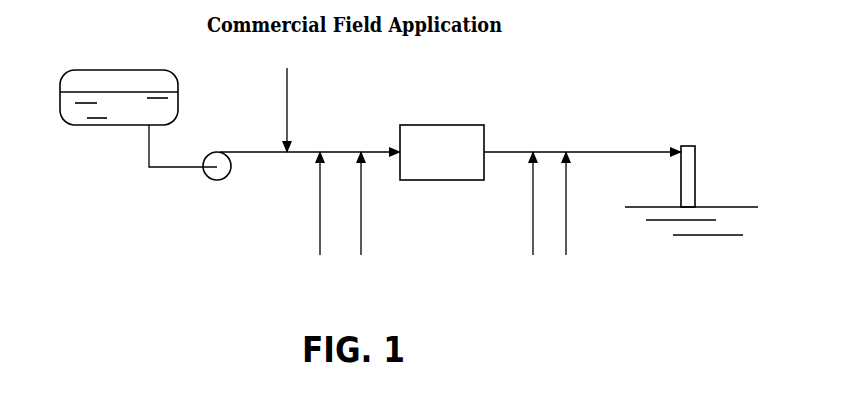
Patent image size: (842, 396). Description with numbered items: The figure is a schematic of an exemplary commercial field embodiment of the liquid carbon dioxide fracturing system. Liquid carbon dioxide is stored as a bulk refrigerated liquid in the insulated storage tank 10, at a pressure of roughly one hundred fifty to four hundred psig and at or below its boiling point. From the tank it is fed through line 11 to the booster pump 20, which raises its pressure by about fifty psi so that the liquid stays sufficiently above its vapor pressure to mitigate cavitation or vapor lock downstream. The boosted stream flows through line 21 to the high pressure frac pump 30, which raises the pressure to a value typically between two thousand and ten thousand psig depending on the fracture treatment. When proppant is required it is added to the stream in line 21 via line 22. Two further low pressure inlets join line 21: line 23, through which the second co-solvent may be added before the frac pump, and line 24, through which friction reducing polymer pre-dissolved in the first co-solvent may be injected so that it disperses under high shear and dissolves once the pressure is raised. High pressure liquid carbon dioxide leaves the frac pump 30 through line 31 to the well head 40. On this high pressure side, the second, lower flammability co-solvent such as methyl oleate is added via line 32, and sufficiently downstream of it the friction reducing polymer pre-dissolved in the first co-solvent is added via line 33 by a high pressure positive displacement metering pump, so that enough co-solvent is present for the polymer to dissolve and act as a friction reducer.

The insulated storage tank 10 is at (131, 112).
The line 11 is at (168, 167).
The booster pump 20 is at (218, 181).
The line 21 is at (266, 153).
The line 22 is at (288, 72).
The line 23 is at (318, 247).
The line 24 is at (363, 247).
The high pressure frac pump 30 is at (452, 162).
The line 31 is at (502, 150).
The line 32 is at (530, 247).
The line 33 is at (568, 247).
The well head 40 is at (697, 162).